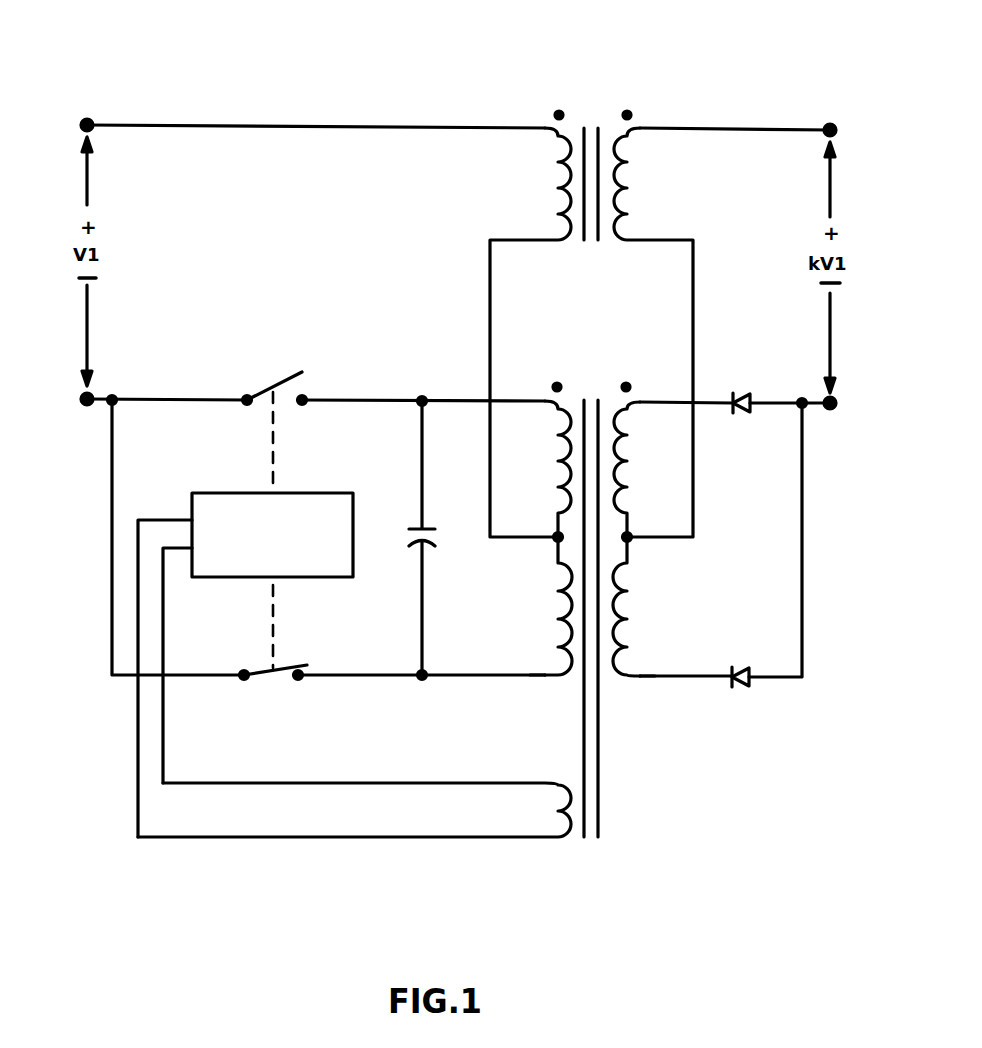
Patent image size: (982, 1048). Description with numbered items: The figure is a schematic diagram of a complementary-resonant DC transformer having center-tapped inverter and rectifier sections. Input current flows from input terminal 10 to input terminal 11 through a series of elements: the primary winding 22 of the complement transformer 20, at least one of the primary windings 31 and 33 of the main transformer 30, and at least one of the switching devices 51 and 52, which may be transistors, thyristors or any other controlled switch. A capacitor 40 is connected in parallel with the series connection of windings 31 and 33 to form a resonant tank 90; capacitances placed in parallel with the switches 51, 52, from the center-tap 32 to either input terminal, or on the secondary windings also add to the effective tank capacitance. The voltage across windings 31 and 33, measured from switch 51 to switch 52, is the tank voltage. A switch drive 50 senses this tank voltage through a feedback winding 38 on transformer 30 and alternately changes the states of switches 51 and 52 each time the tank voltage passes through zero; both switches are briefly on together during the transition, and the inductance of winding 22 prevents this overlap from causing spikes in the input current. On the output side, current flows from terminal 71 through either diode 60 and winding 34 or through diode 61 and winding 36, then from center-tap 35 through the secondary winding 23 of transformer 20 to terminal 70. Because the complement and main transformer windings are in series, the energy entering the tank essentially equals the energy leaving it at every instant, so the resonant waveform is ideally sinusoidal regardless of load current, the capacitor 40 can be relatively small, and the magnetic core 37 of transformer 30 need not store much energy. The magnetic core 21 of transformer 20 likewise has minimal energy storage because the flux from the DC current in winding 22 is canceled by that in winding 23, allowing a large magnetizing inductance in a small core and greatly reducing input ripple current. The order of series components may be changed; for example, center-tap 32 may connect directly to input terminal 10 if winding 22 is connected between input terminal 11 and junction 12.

The input terminal 10 is at (87, 112).
The input terminal 11 is at (87, 412).
The junction 12 is at (112, 396).
The transformer 20 is at (591, 277).
The magnetic core 21 is at (592, 243).
The primary winding 22 is at (543, 124).
The winding 23 is at (645, 124).
The transformer 30 is at (409, 653).
The primary winding 31 is at (556, 432).
The center-tap 32 is at (552, 548).
The primary winding 33 is at (553, 678).
The winding 34 is at (629, 432).
The center-tap 35 is at (630, 548).
The winding 36 is at (630, 678).
The magnetic core 37 is at (599, 746).
The feedback winding 38 is at (587, 849).
The capacitor 40 is at (422, 552).
The switch drive 50 is at (210, 492).
The switching device 51 is at (266, 390).
The switching device 52 is at (256, 680).
The diode 60 is at (756, 400).
The diode 61 is at (756, 680).
The terminal 70 is at (830, 118).
The terminal 71 is at (830, 415).
The resonant tank 90 is at (443, 353).